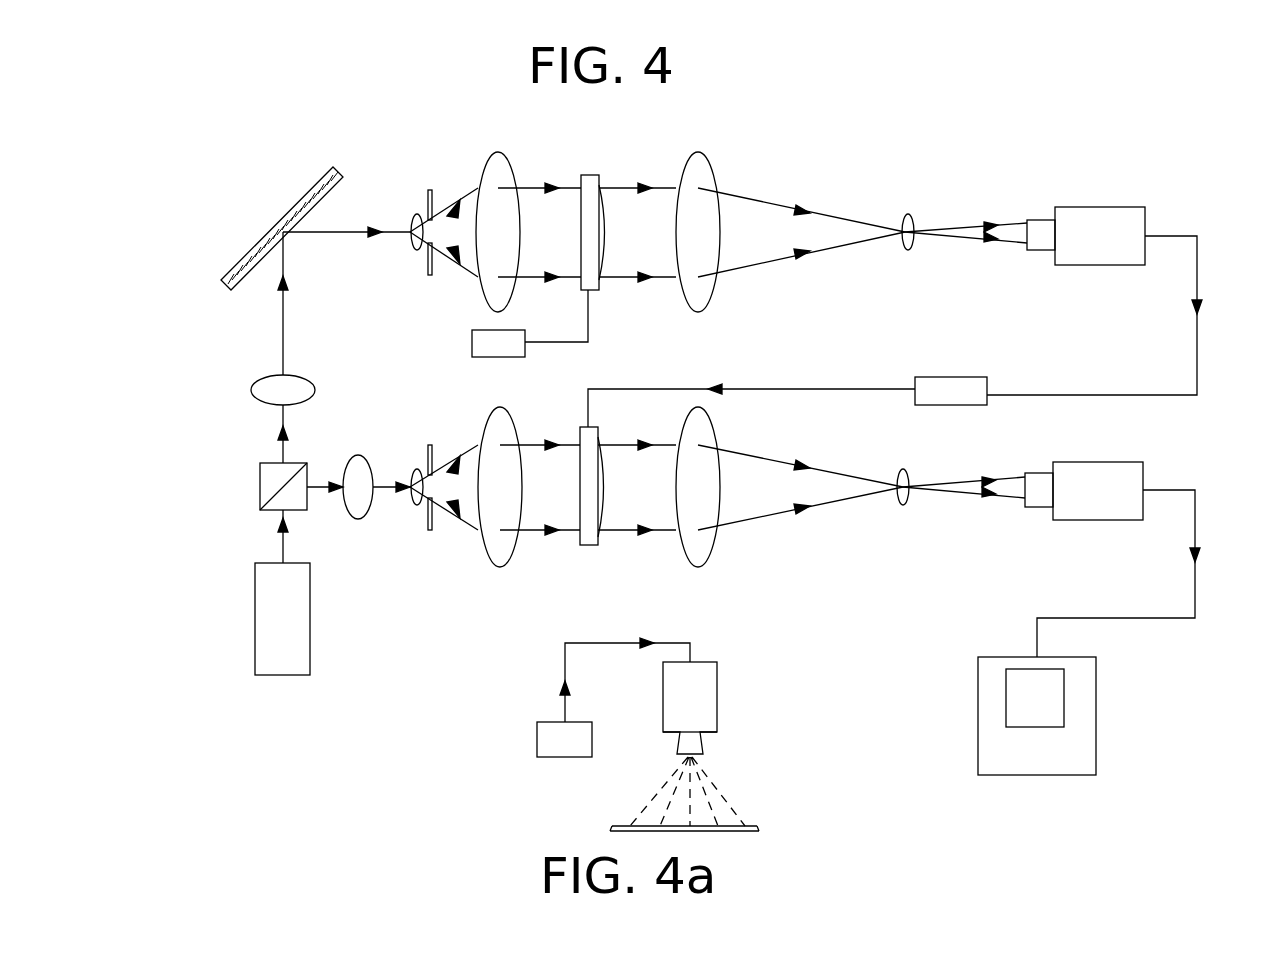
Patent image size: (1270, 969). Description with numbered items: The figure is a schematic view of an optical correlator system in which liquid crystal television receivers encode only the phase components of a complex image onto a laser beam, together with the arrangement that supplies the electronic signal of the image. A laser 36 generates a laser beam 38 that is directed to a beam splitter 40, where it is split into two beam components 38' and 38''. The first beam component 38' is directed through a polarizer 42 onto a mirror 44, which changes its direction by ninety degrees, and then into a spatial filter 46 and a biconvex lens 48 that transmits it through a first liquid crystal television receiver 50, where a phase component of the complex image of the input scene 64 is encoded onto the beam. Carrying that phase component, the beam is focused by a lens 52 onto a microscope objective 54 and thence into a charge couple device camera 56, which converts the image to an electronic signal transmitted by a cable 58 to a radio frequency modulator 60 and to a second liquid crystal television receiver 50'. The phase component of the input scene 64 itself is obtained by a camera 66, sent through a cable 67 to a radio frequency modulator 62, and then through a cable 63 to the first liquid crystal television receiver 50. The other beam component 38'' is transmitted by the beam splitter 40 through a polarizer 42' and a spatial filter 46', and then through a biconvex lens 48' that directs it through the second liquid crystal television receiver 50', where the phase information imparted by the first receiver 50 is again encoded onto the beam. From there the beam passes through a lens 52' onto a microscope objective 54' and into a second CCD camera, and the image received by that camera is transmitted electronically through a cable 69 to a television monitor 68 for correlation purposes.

In FIG. 4, the laser 36 is at (283, 675).
In FIG. 4, the laser beam 38 is at (249, 536).
In FIG. 4, the beam component 38' is at (309, 347).
In FIG. 4, the beam component 38'' is at (348, 522).
In FIG. 4, the beam splitter 40 is at (268, 462).
In FIG. 4, the polarizer 42 is at (256, 385).
In FIG. 4, the polarizer 42' is at (358, 463).
In FIG. 4, the mirror 44 is at (312, 183).
In FIG. 4, the spatial filter 46 is at (430, 220).
In FIG. 4, the spatial filter 46' is at (444, 465).
In FIG. 4, the biconvex lens 48 is at (528, 216).
In FIG. 4, the biconvex lens 48' is at (502, 504).
In FIG. 4, the first liquid crystal television receiver 50 is at (628, 216).
In FIG. 4, the second liquid crystal television receiver 50' is at (628, 510).
In FIG. 4, the lens 52 is at (790, 229).
In FIG. 4, the lens 52' is at (789, 494).
In FIG. 4, the microscope objective 54 is at (964, 215).
In FIG. 4, the microscope objective 54' is at (961, 508).
In FIG. 4, the charge couple device (CCD) camera 56 is at (1072, 207).
In FIG. 4, the cable 58 is at (1195, 350).
In FIG. 4, the radio frequency modulator 60 is at (950, 377).
In FIG. 4, the radio frequency modulator 62 is at (478, 330).
In FIG. 4A, the radio frequency modulator 62 is at (536, 742).
In FIG. 4, the cable 63 is at (588, 313).
In FIG. 4A, the input scene 64 is at (748, 828).
In FIG. 4A, the camera 66 is at (707, 662).
In FIG. 4A, the cable 67 is at (583, 643).
In FIG. 4, the television monitor 68 is at (1097, 710).
In FIG. 4, the cable 69 is at (1155, 618).